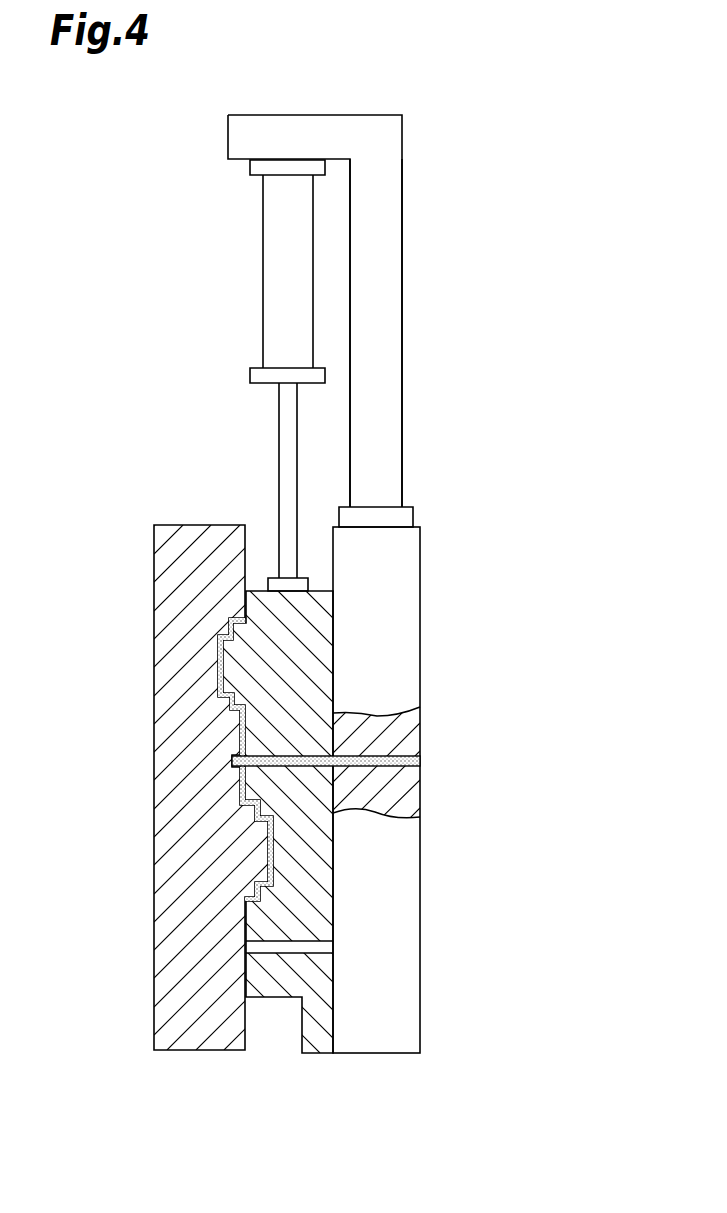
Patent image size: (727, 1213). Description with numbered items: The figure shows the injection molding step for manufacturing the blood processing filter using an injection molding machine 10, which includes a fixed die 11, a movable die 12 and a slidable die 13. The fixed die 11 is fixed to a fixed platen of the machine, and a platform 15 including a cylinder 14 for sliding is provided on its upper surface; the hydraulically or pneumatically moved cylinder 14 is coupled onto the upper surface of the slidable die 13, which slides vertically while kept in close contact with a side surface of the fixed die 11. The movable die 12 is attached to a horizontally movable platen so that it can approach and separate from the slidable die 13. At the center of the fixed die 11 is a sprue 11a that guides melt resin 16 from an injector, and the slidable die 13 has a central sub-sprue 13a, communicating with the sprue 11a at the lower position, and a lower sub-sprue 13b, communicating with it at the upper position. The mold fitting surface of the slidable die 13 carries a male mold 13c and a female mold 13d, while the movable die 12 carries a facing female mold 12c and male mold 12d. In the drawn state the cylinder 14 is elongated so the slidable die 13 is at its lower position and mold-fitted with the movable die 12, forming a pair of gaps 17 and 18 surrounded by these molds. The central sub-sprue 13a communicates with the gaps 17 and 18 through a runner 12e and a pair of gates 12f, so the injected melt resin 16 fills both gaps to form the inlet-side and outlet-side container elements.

The injection molding machine 10 is at (513, 350).
The fixed die 11 is at (397, 615).
The sprue 11a is at (378, 748).
The movable die 12 is at (182, 566).
The female mold 12c is at (218, 680).
The male mold 12d is at (260, 872).
The runner 12e is at (232, 764).
The gates 12f is at (240, 737).
The slidable die 13 is at (320, 617).
The central sub-sprue 13a is at (293, 752).
The lower sub-sprue 13b is at (285, 940).
The male mold 13c is at (219, 647).
The female mold 13d is at (274, 833).
The cylinder 14 is at (286, 270).
The platform 15 is at (374, 272).
The melt resin 16 is at (422, 760).
The gap 17 is at (220, 668).
The gap 18 is at (268, 849).